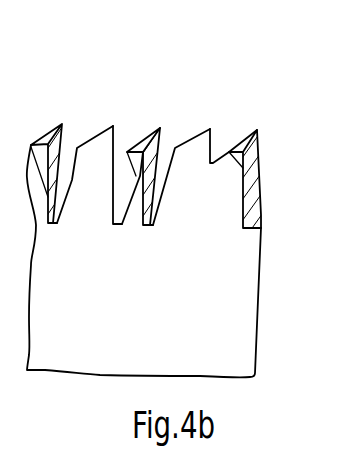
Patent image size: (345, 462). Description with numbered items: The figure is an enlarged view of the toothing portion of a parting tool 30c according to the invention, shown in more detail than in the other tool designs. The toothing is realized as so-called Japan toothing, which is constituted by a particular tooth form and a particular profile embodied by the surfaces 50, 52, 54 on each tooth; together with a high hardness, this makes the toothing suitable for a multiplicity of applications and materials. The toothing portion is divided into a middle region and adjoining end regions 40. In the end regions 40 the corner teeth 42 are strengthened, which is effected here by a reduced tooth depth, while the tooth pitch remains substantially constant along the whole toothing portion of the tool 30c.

The tool 30c is at (261, 268).
The end region 40 is at (257, 128).
The corner tooth 42 is at (217, 190).
The surface 50 is at (128, 168).
The surface 52 is at (164, 165).
The surface 54 is at (152, 150).